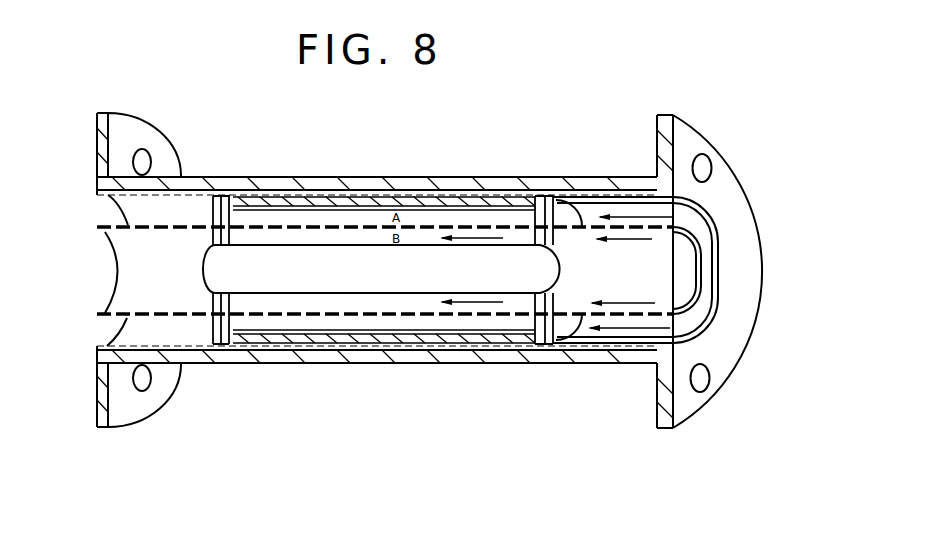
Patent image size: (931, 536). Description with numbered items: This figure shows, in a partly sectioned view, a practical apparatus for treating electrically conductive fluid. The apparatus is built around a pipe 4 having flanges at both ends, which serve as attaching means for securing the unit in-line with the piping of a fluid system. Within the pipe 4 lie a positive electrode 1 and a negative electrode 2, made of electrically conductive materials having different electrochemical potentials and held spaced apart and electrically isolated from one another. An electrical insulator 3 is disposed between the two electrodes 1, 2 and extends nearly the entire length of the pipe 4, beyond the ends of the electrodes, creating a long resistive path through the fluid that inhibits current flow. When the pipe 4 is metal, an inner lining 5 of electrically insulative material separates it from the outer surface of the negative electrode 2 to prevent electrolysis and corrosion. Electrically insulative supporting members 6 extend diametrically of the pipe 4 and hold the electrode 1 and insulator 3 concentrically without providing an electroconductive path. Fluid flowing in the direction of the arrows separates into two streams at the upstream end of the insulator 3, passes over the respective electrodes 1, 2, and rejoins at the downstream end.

The positive electrode 1 is at (213, 274).
The negative electrode 2 is at (462, 194).
The electrical insulator 3 is at (695, 251).
The pipe 4 is at (690, 142).
The inner lining 5 is at (603, 348).
The electrically insulative supporting member 6 is at (218, 327).